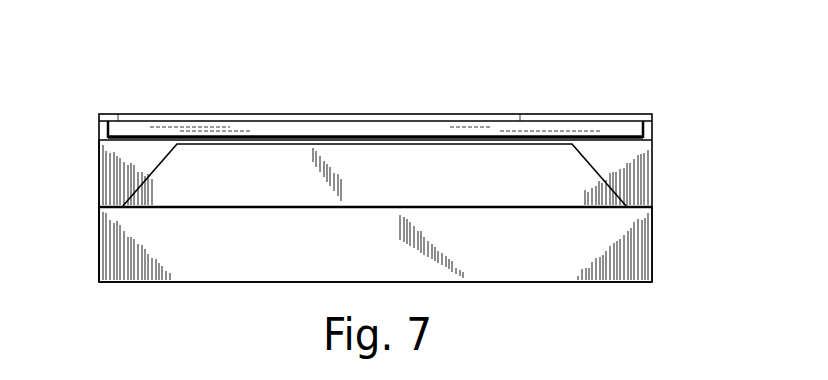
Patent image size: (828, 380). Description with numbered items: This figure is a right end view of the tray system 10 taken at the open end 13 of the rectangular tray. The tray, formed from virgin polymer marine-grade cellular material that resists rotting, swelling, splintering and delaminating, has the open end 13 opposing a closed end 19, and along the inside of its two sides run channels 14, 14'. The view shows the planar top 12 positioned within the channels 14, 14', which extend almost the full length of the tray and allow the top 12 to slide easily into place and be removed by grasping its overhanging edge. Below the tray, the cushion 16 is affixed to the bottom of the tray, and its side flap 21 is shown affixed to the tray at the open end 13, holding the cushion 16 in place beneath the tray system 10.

The tray system 10 is at (571, 79).
The planar top 12 is at (418, 122).
The open end 13 is at (98, 168).
The channel 14 is at (134, 111).
The channel 14' is at (620, 111).
The cushion 16 is at (389, 260).
The closed end 19 is at (216, 114).
The side flap 21 is at (389, 188).